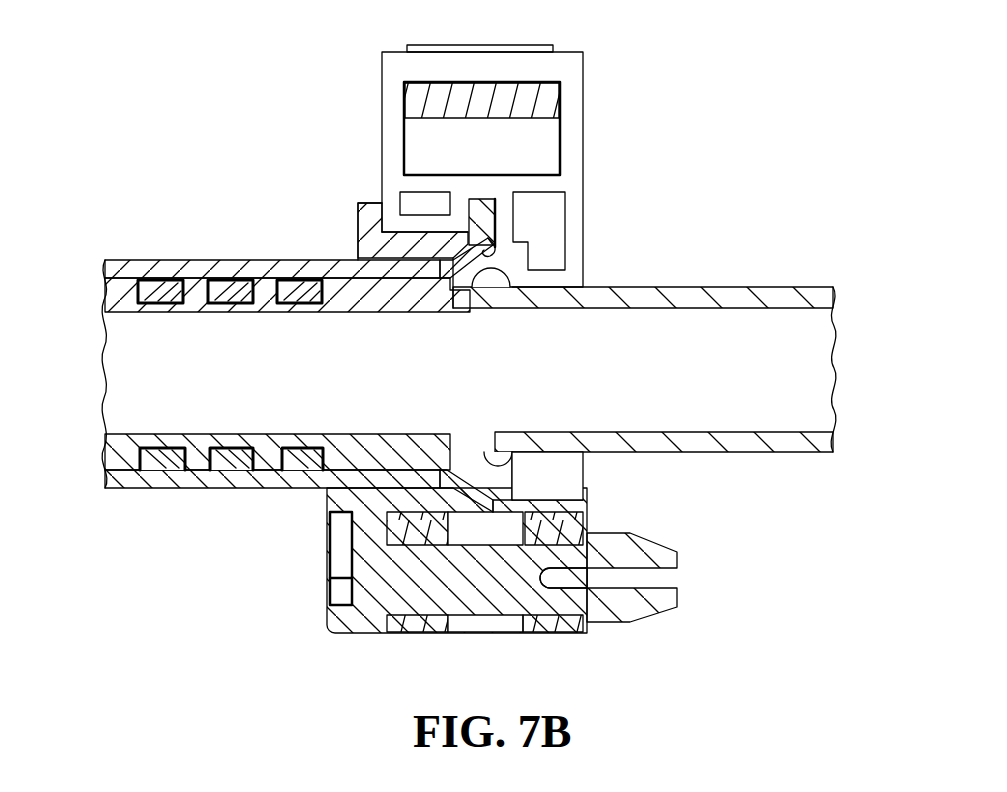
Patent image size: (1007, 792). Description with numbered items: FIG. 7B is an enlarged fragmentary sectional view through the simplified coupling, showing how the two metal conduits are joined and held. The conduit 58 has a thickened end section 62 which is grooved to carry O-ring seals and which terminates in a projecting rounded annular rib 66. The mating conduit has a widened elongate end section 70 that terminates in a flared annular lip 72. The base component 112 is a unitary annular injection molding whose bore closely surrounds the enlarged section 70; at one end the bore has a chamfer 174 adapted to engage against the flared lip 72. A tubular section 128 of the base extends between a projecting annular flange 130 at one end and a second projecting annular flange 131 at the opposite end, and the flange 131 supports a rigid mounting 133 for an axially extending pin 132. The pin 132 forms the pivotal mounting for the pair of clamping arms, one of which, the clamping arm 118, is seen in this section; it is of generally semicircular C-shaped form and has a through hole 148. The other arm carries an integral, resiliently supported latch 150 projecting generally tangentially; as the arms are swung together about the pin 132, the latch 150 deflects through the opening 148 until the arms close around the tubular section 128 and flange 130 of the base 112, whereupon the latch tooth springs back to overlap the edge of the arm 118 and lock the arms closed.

The conduit 58 is at (745, 287).
The thickened end section 62 is at (153, 310).
The projecting rounded annular rib 66 is at (490, 295).
The widened elongate end section 70 is at (215, 266).
The flared annular lip 72 is at (470, 484).
The base component 112 is at (350, 231).
The clamping arm 118 is at (380, 83).
The tubular section 128 is at (415, 247).
The projecting annular flange 130 is at (484, 212).
The second projecting annular flange 131 is at (368, 200).
The axially extending pin 132 is at (496, 602).
The rigid mounting 133 is at (337, 621).
The through hole 148 is at (538, 152).
The latch 150 is at (536, 100).
The chamfer 174 is at (492, 249).